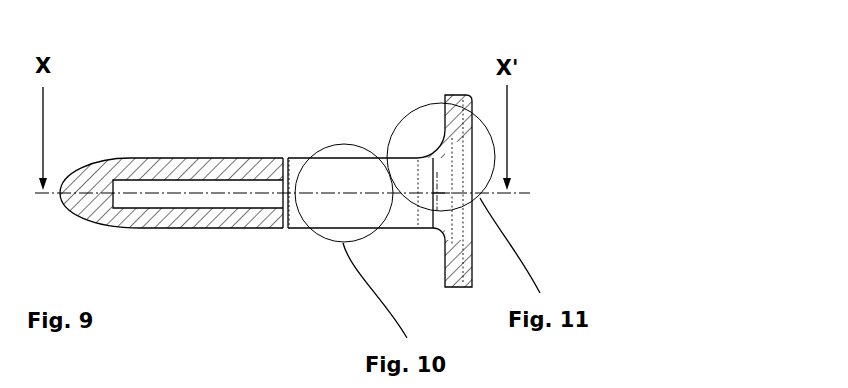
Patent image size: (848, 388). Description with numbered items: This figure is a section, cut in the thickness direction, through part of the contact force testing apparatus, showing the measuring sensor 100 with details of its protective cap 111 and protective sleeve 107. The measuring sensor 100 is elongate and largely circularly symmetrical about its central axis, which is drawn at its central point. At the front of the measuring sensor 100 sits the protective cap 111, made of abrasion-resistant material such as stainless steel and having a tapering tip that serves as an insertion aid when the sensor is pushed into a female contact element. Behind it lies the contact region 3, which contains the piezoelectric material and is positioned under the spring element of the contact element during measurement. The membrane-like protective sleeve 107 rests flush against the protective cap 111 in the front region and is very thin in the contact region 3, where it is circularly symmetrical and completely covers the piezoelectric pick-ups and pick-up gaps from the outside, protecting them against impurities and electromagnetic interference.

The protective cap 111 is at (167, 157).
The protective sleeve 107 is at (297, 157).
The contact region 3 is at (364, 130).
The measuring sensor 100 is at (578, 178).